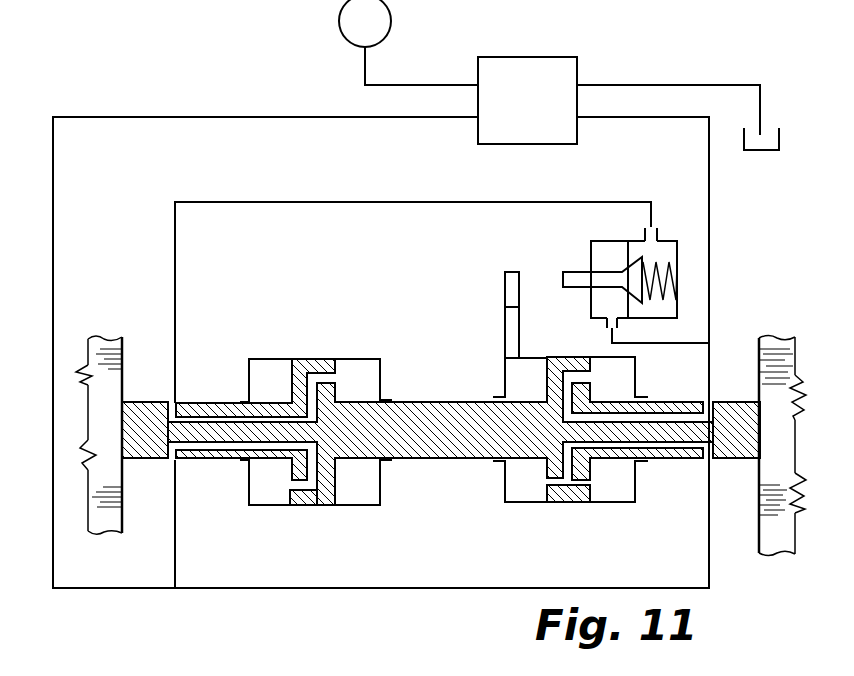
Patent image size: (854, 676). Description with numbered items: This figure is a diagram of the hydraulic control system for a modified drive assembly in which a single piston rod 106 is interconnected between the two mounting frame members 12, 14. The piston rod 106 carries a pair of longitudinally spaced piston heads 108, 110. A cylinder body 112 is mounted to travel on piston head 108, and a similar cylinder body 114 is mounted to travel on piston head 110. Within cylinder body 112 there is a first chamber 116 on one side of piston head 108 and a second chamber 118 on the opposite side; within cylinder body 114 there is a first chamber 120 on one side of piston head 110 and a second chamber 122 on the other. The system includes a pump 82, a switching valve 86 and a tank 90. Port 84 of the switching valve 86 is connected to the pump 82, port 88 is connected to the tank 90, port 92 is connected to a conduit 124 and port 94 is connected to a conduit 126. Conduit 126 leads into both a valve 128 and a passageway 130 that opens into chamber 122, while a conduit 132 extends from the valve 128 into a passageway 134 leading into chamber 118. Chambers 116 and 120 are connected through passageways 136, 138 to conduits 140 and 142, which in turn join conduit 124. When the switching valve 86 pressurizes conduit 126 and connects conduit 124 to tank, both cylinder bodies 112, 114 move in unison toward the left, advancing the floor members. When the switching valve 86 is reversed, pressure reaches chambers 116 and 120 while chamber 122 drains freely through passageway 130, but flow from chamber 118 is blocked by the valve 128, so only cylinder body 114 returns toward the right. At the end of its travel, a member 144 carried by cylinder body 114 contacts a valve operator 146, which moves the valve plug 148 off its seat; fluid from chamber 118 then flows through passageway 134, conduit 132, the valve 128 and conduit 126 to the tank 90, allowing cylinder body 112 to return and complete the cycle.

The mounting frame member 12 is at (782, 350).
The mounting frame member 14 is at (100, 350).
The pump 82 is at (391, 24).
The port 84 is at (478, 84).
The switching valve 86 is at (532, 57).
The port 88 is at (578, 65).
The tank 90 is at (760, 100).
The port 92 is at (477, 128).
The port 94 is at (578, 128).
The piston rod 106 is at (432, 443).
The piston head 108 is at (330, 415).
The piston head 110 is at (540, 370).
The cylinder body 112 is at (283, 348).
The cylinder body 114 is at (542, 515).
The first chamber 116 is at (275, 490).
The second chamber 118 is at (347, 490).
The first chamber 120 is at (522, 485).
The second chamber 122 is at (620, 502).
The conduit 124 is at (240, 118).
The conduit 126 is at (659, 118).
The valve 128 is at (610, 242).
The passageway 130 is at (652, 418).
The conduit 132 is at (225, 203).
The passageway 134 is at (209, 422).
The passageway 136 is at (215, 448).
The passageway 138 is at (680, 442).
The conduit 140 is at (235, 588).
The conduit 142 is at (173, 513).
The member 144 is at (512, 289).
The valve operator 146 is at (580, 280).
The valve plug 148 is at (645, 266).